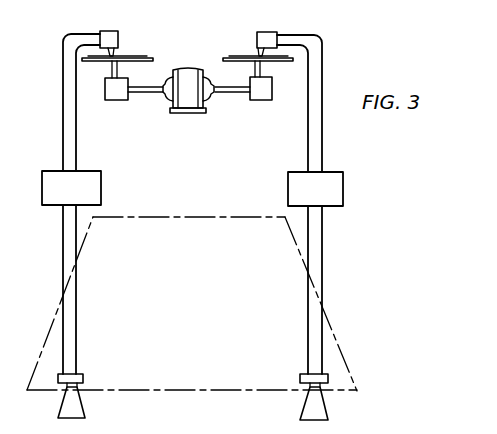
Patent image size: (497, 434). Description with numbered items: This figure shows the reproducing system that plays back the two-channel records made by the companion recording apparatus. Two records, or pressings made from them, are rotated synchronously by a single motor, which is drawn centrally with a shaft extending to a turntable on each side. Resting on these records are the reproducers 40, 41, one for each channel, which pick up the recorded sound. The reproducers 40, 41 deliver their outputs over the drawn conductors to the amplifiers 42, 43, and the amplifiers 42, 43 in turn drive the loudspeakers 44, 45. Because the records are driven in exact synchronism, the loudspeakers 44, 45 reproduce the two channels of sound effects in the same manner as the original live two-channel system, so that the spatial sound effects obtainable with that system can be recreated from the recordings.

The reproducer 40 is at (118, 42).
The reproducer 41 is at (257, 42).
The amplifier 42 is at (42, 190).
The amplifier 43 is at (343, 192).
The loudspeaker 44 is at (60, 407).
The loudspeaker 45 is at (323, 403).